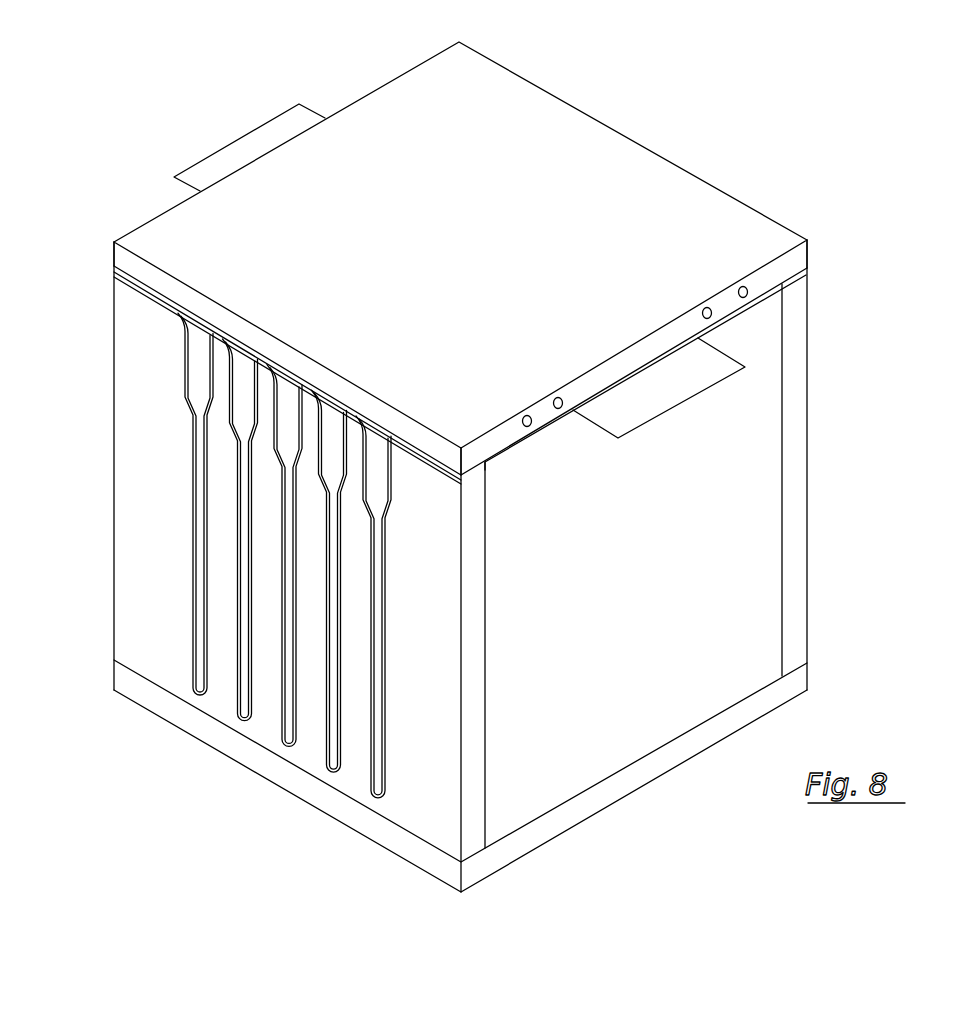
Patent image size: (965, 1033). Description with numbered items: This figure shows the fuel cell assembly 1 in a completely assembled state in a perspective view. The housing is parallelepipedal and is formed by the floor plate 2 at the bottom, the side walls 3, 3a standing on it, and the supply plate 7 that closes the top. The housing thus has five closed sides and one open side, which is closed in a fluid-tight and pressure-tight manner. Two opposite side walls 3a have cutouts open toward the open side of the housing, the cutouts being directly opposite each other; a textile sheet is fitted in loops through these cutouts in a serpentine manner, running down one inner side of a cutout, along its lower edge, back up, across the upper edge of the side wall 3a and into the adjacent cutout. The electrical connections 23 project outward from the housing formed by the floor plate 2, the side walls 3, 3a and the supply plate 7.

The fuel cell assembly 1 is at (858, 208).
The supply plate 7 is at (657, 195).
The electrical connections 23 is at (277, 127).
The floor plate 2 is at (797, 682).
The side walls 3 is at (693, 615).
The side walls with cutouts 3a is at (427, 800).